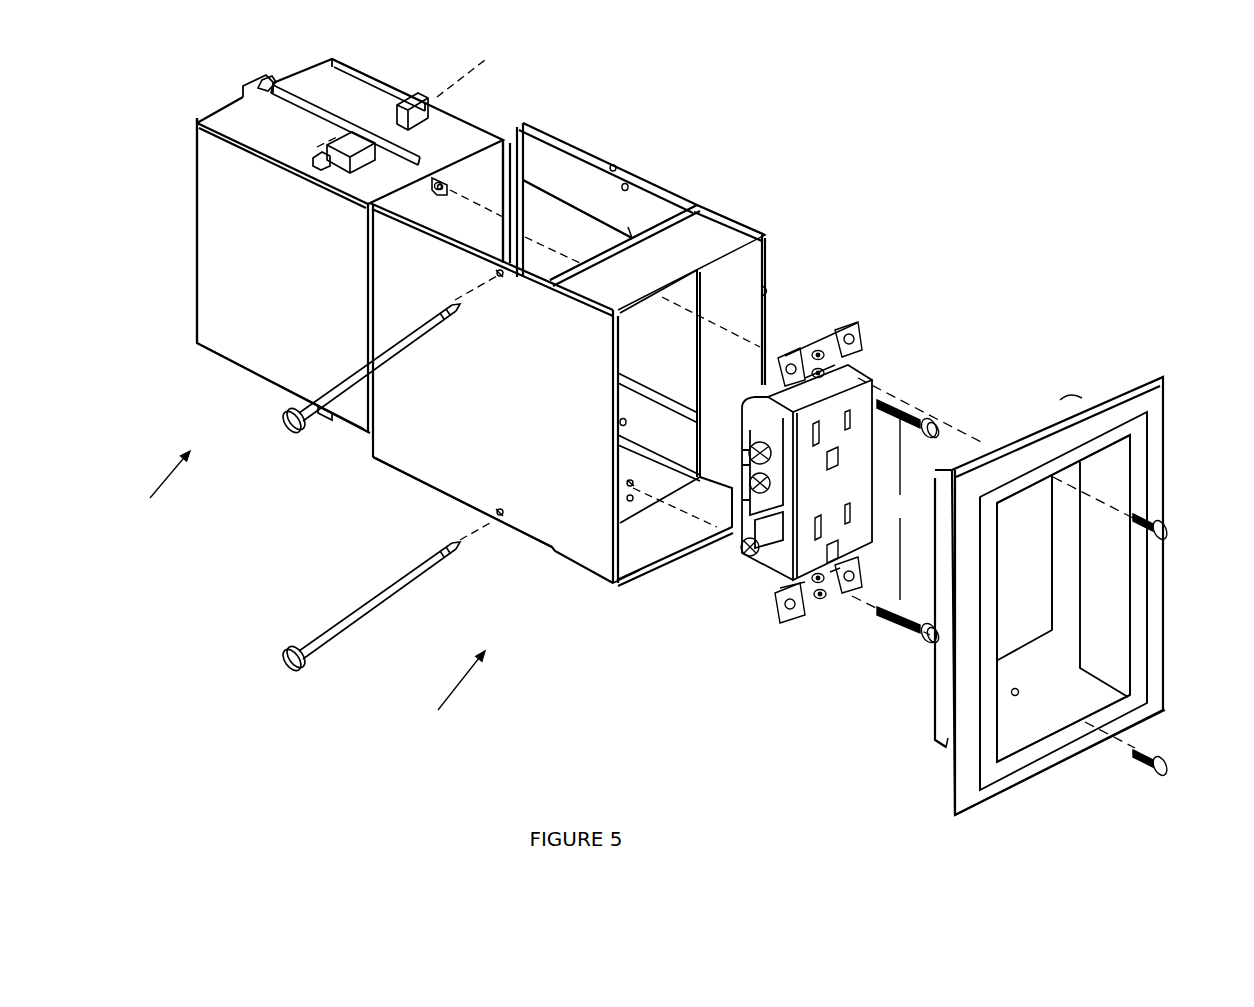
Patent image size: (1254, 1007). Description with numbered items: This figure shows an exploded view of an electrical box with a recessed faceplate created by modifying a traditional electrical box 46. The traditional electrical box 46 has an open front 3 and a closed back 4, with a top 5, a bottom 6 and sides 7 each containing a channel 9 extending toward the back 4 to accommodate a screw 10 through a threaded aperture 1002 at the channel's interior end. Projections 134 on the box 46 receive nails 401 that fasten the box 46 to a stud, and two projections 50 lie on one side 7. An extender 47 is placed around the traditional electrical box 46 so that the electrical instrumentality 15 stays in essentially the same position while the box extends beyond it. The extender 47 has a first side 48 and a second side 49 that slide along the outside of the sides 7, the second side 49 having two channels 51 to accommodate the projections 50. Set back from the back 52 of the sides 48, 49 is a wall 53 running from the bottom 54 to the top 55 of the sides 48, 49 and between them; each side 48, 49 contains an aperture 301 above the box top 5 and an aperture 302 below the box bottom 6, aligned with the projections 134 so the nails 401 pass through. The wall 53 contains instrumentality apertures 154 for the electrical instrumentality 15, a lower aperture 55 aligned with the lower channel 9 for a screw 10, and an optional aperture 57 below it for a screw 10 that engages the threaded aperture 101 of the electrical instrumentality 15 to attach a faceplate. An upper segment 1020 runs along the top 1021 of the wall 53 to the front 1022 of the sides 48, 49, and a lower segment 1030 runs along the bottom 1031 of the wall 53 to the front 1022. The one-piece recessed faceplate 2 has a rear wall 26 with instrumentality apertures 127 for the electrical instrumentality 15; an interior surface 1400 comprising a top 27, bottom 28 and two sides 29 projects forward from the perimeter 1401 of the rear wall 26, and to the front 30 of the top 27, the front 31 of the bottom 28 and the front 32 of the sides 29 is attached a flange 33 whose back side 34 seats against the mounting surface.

The one-piece recessed faceplate 2 is at (1085, 345).
The open front 3 is at (417, 202).
The closed back 4 is at (252, 88).
The top 5 is at (357, 78).
The bottom 6 is at (232, 365).
The sides 7 is at (218, 315).
The channel 9 is at (265, 84).
The screw 10 is at (1162, 797).
The electrical instrumentality 15 is at (780, 563).
The rear wall 26 is at (1070, 555).
The top 27 is at (1032, 417).
The bottom 28 is at (1037, 732).
The sides 29 is at (1120, 476).
The front of the top 30 is at (1118, 443).
The front of the bottom 31 is at (1010, 760).
The front of the sides 32 is at (1130, 643).
The flange 33 is at (1128, 405).
The back side of flange 34 is at (1132, 383).
The traditional electrical box 46 is at (159, 489).
The extender 47 is at (451, 694).
The first side 48 is at (420, 460).
The second side 49 is at (595, 170).
The projections 50 is at (523, 138).
The channels 51 is at (628, 227).
The back of the sides 52 is at (372, 443).
The wall 53 is at (615, 310).
The bottom of the sides 54 is at (447, 497).
The top of the sides 55 is at (613, 165).
The aperture 57 is at (631, 503).
The threaded aperture 101 is at (818, 352).
The instrumentality apertures 127 is at (1040, 592).
The projections 134 is at (405, 113).
The instrumentality apertures 154 is at (623, 407).
The aperture 301 is at (502, 278).
The aperture 302 is at (502, 518).
The nails 401 is at (285, 430).
The threaded aperture 1002 is at (434, 194).
The upper segment 1020 is at (730, 233).
The top of the wall 1021 is at (665, 218).
The front of the sides 1022 is at (767, 252).
The lower segment 1030 is at (617, 585).
The bottom of the wall 1031 is at (648, 510).
The interior surface 1400 is at (1070, 402).
The perimeter 1401 is at (1082, 615).